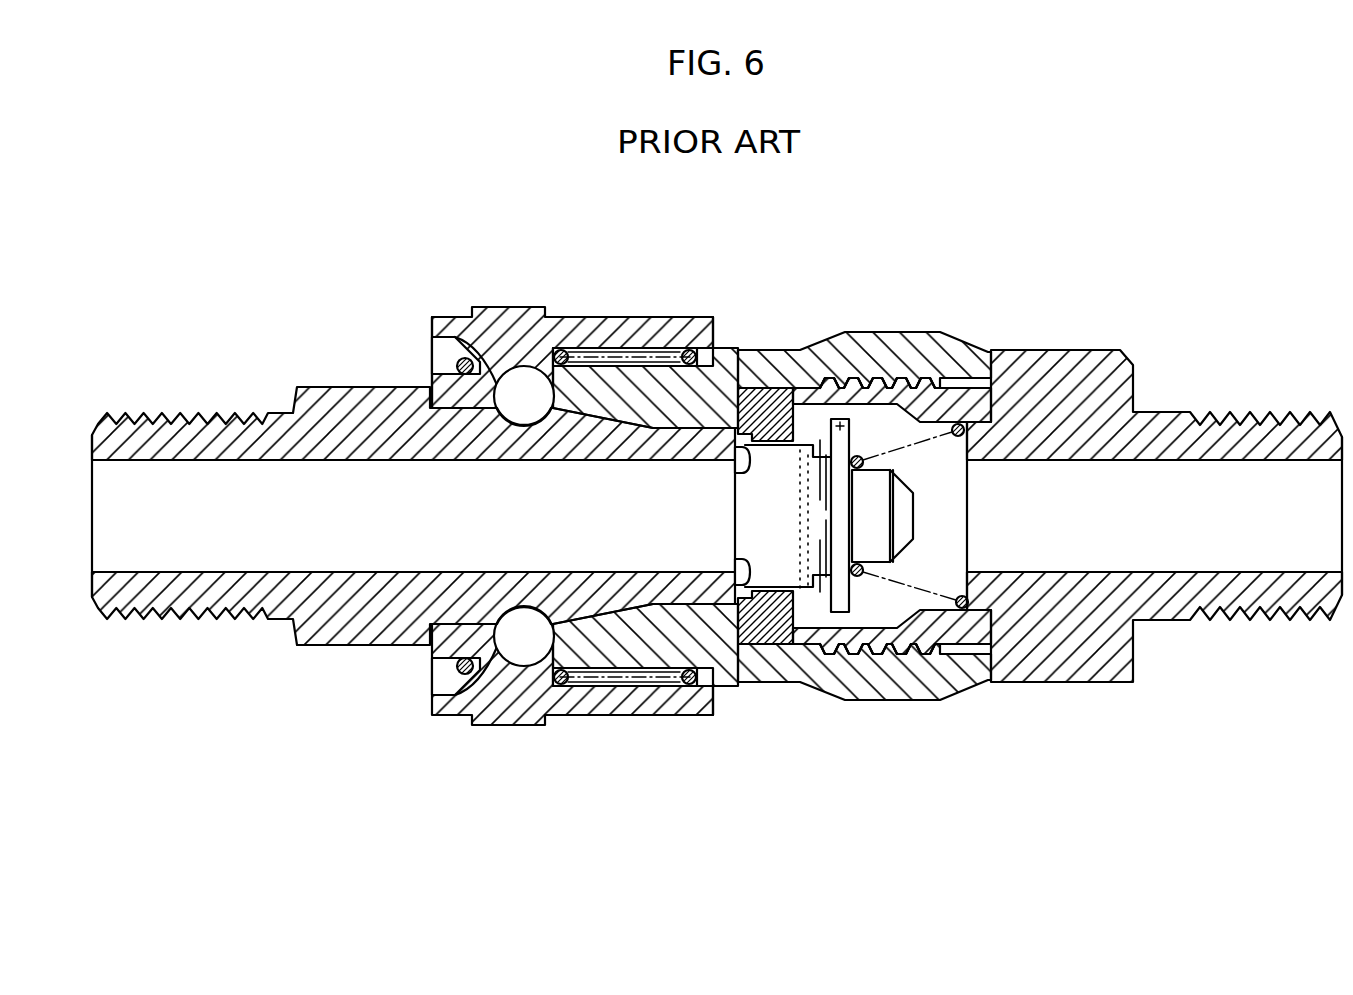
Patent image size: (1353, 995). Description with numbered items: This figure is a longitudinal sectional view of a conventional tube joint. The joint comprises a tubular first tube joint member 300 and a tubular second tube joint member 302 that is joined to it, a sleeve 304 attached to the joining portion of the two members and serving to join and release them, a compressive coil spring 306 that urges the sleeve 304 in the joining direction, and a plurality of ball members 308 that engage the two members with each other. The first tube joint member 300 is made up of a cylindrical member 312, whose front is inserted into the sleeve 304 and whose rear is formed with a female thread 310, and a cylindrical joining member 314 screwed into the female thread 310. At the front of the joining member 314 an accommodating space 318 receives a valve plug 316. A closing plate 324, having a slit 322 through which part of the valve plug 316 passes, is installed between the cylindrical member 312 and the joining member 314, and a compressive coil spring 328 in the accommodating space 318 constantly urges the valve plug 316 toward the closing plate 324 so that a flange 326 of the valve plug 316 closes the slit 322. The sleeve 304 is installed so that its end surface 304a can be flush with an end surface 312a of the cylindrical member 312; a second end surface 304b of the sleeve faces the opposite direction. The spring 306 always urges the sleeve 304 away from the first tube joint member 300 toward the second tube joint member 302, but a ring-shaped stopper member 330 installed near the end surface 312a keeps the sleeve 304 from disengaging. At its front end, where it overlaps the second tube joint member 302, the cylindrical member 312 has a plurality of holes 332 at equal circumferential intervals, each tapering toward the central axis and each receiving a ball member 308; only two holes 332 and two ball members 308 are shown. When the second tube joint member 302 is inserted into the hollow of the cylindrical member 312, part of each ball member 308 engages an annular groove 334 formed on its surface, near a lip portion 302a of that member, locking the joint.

The first tube joint member 300 is at (1080, 348).
The second tube joint member 302 is at (372, 648).
The annular lip of plug body 302a is at (745, 462).
The sleeve 304 is at (604, 315).
The end surface of the sleeve 304a is at (433, 325).
The sleeve end face 304b is at (713, 318).
The compressive coil spring 306 is at (687, 347).
The ball member 308 is at (523, 392).
The female thread 310 is at (885, 382).
The cylindrical member 312 is at (784, 350).
The end surface of the cylindrical member 312a is at (438, 380).
The joining member 314 is at (1043, 372).
The valve plug 316 is at (800, 568).
The accommodating space 318 is at (886, 608).
The slit 322 is at (767, 388).
The closing plate 324 is at (762, 642).
The flange 326 is at (847, 419).
The compressive coil spring 328 is at (963, 607).
The ring-shaped stopper member 330 is at (458, 358).
The hole 332 is at (549, 350).
The annular groove 334 is at (510, 424).